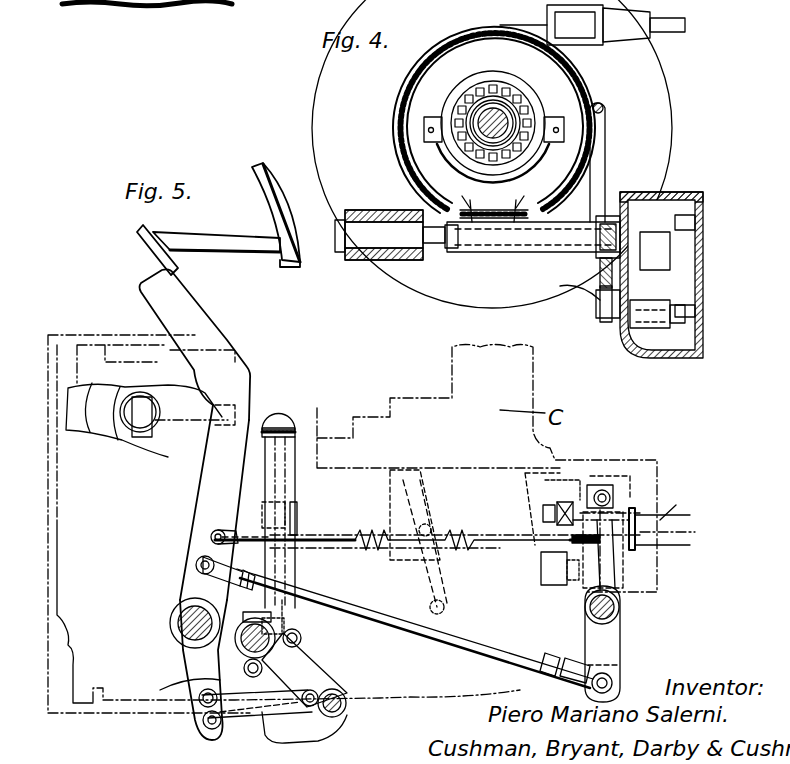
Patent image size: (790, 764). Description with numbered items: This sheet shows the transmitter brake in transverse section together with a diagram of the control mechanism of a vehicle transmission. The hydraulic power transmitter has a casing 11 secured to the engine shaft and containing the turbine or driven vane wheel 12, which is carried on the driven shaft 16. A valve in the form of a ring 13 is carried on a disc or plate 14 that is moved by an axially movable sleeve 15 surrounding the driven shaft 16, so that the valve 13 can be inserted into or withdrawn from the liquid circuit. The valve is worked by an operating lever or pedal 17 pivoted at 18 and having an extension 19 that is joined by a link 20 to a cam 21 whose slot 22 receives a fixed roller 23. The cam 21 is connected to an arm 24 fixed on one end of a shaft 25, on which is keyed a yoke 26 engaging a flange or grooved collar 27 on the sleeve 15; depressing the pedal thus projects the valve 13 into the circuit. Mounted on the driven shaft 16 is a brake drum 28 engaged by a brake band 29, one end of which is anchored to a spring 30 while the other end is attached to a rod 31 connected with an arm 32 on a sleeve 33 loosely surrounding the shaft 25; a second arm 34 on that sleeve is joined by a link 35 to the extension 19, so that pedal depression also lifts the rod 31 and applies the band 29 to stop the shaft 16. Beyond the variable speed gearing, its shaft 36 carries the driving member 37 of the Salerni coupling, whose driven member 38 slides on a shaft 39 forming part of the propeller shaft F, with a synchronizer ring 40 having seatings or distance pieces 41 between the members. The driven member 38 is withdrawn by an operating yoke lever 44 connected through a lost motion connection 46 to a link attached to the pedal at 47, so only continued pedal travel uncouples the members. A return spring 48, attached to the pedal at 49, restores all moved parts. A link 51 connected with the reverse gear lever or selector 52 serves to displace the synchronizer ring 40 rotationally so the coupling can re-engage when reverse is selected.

In FIG. 5, the casing 11 is at (165, 405).
In FIG. 5, the turbine or driven vane wheel 12 is at (108, 413).
In FIG. 5, the valve ring 13 is at (195, 420).
In FIG. 5, the disc or plate 14 is at (225, 428).
In FIG. 4, the axially movable sleeve 15 is at (500, 100).
In FIG. 5, the axially movable sleeve 15 is at (162, 363).
In FIG. 4, the driven shaft 16 is at (490, 105).
In FIG. 5, the operating lever or pedal 17 is at (185, 315).
In FIG. 5, the pivot 18 is at (175, 612).
In FIG. 5, the extension 19 is at (200, 650).
In FIG. 5, the link 20 is at (235, 720).
In FIG. 4, the cam 21 is at (672, 315).
In FIG. 5, the cam 21 is at (325, 690).
In FIG. 5, the slot 22 is at (332, 722).
In FIG. 4, the fixed roller 23 is at (650, 330).
In FIG. 5, the fixed roller 23 is at (346, 705).
In FIG. 4, the arm 24 is at (662, 200).
In FIG. 5, the arm 24 is at (302, 640).
In FIG. 4, the shaft 25 is at (698, 196).
In FIG. 5, the shaft 25 is at (285, 625).
In FIG. 4, the yoke 26 is at (430, 160).
In FIG. 5, the yoke 26 is at (300, 542).
In FIG. 4, the flange or grooved collar 27 is at (425, 128).
In FIG. 5, the flange or grooved collar 27 is at (240, 528).
In FIG. 4, the brake drum 28 is at (560, 86).
In FIG. 5, the brake drum 28 is at (301, 522).
In FIG. 4, the brake band 29 is at (402, 97).
In FIG. 5, the brake band 29 is at (285, 416).
In FIG. 4, the spring 30 is at (572, 30).
In FIG. 5, the spring 30 is at (283, 412).
In FIG. 4, the rod 31 is at (606, 126).
In FIG. 5, the rod 31 is at (290, 578).
In FIG. 4, the arm 32 is at (562, 252).
In FIG. 5, the arm 32 is at (258, 673).
In FIG. 4, the sleeve 33 is at (604, 255).
In FIG. 5, the sleeve 33 is at (225, 690).
In FIG. 4, the arm 34 is at (600, 305).
In FIG. 5, the arm 34 is at (190, 684).
In FIG. 4, the link 35 is at (610, 312).
In FIG. 5, the link 35 is at (204, 720).
In FIG. 5, the variable speed gearing shaft 36 is at (540, 572).
In FIG. 5, the driving member 37 is at (543, 510).
In FIG. 5, the driven member 38 is at (615, 485).
In FIG. 5, the shaft 39 is at (630, 540).
In FIG. 5, the synchronizer ring 40 is at (560, 482).
In FIG. 5, the seatings or distance pieces 41 is at (598, 486).
In FIG. 5, the operating yoke lever 44 is at (605, 636).
In FIG. 5, the lost motion connection 46 is at (612, 683).
In FIG. 5, the pedal attachment point 47 is at (196, 568).
In FIG. 5, the return spring 48 is at (448, 530).
In FIG. 5, the spring attachment point 49 is at (211, 540).
In FIG. 5, the link 51 is at (480, 544).
In FIG. 5, the reverse gear lever or selector 52 is at (420, 565).
In FIG. 5, the propeller shaft F is at (659, 516).